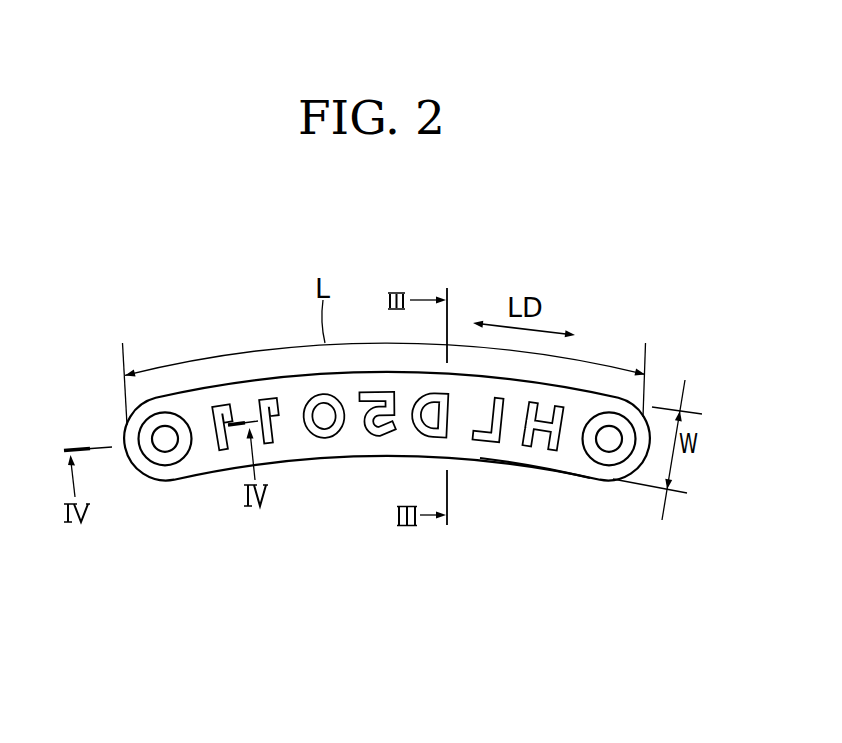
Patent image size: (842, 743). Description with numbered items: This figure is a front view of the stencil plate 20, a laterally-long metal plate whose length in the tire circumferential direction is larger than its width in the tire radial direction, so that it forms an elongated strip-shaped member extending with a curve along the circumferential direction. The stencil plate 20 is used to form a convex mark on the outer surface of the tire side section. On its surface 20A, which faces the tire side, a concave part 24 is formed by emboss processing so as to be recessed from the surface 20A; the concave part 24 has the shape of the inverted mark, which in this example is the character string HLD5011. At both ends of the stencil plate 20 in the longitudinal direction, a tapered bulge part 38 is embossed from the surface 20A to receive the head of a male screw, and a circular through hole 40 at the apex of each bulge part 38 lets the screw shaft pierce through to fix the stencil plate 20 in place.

The stencil plate 20 is at (400, 255).
The surface of the stencil plate 20A is at (543, 457).
The concave part 24 is at (372, 438).
The bulge part 38 is at (150, 424).
The through hole 40 is at (170, 441).